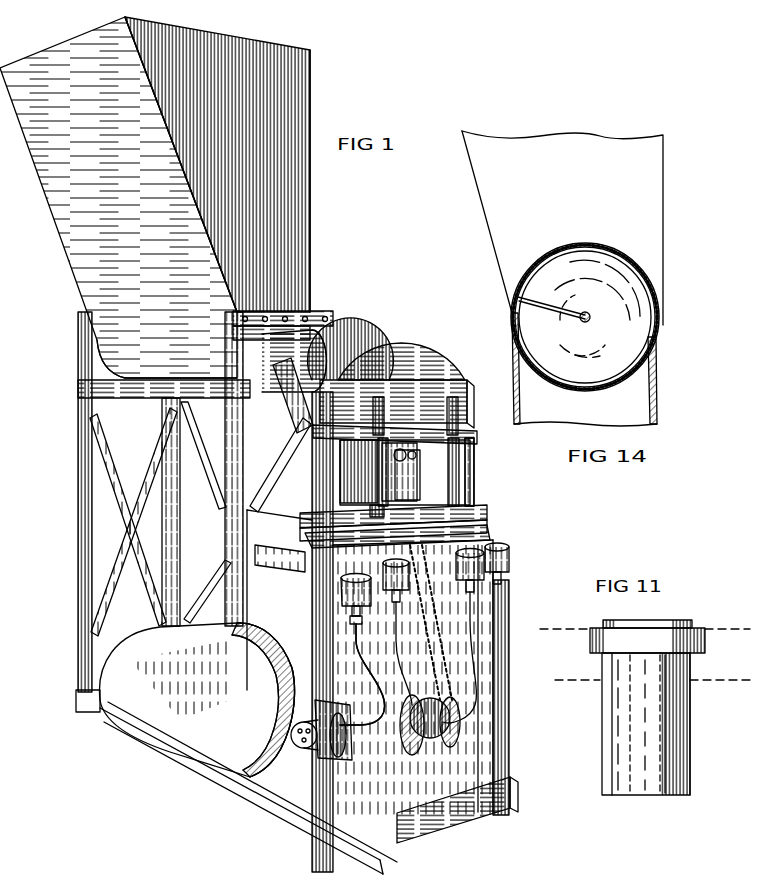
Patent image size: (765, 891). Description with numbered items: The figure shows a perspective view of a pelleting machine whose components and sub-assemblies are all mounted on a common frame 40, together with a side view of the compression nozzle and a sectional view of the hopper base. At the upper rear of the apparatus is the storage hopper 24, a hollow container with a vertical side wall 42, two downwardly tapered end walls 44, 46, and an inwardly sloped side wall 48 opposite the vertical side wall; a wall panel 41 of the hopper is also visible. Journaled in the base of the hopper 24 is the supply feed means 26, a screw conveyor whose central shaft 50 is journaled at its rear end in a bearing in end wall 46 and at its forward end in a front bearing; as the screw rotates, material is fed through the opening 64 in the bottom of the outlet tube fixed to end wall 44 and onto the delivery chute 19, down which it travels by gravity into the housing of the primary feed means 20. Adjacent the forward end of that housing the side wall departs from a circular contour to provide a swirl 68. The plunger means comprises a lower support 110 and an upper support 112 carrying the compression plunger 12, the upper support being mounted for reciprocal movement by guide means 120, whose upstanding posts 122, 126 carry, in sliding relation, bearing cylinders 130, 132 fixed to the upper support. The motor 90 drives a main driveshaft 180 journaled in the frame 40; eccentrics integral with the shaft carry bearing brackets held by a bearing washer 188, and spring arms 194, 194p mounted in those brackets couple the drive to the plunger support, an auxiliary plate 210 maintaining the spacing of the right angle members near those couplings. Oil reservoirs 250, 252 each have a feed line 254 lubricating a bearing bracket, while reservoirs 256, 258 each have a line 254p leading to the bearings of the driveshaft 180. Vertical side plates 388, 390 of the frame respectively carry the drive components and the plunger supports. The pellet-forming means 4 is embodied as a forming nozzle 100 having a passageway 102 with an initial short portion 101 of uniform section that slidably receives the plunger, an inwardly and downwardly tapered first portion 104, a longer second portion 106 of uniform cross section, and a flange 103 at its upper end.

In FIG. 1, the storage hopper 24 is at (187, 197).
In FIG. 14, the storage hopper 24 is at (598, 278).
In FIG. 1, the end wall 46 is at (42, 56).
In FIG. 1, the end wall 44 is at (217, 164).
In FIG. 1, the vertical side wall 42 is at (312, 122).
In FIG. 1, the hopper wall panel 41 is at (188, 164).
In FIG. 14, the hopper wall panel 41 is at (552, 238).
In FIG. 1, the inwardly sloped side wall 48 is at (92, 278).
In FIG. 1, the frame 40 is at (68, 545).
In FIG. 1, the motor 90 is at (221, 560).
In FIG. 1, the delivery chute 19 is at (290, 398).
In FIG. 14, the delivery chute 19 is at (672, 389).
In FIG. 14, the supply feed means 26 is at (630, 280).
In FIG. 14, the central shaft 50 is at (592, 319).
In FIG. 14, the opening 64 is at (606, 389).
In FIG. 1, the auxiliary plate 210 is at (432, 363).
In FIG. 1, the bearing cylinder 130 is at (461, 382).
In FIG. 1, the bearing cylinder 132 is at (377, 400).
In FIG. 1, the upper support 112 is at (473, 432).
In FIG. 1, the primary feed means 20 is at (405, 469).
In FIG. 1, the spring arm 194 is at (317, 565).
In FIG. 1, the spring arm 194p is at (470, 462).
In FIG. 1, the upstanding post 122 is at (459, 478).
In FIG. 1, the lower support 110 is at (472, 513).
In FIG. 1, the plunger 12 is at (398, 460).
In FIG. 1, the swirl 68 is at (399, 472).
In FIG. 1, the upstanding post 126 is at (377, 473).
In FIG. 1, the guide means 120 is at (377, 518).
In FIG. 1, the oil reservoir 250 is at (337, 607).
In FIG. 1, the oil reservoir 252 is at (510, 548).
In FIG. 1, the reservoir 256 is at (393, 568).
In FIG. 1, the reservoir 258 is at (458, 560).
In FIG. 1, the feed line 254 is at (377, 710).
In FIG. 1, the line 254p is at (480, 667).
In FIG. 1, the vertical side plate 390 is at (508, 699).
In FIG. 1, the vertical side plate 388 is at (392, 823).
In FIG. 1, the main driveshaft 180 is at (343, 757).
In FIG. 1, the bearing washer 188 is at (312, 742).
In FIG. 11, the pellet-forming means 4 is at (645, 691).
In FIG. 11, the forming nozzle 100 is at (696, 719).
In FIG. 11, the initial short portion 101 is at (680, 620).
In FIG. 11, the passageway 102 is at (628, 713).
In FIG. 11, the flange 103 is at (605, 622).
In FIG. 11, the first portion 104 is at (675, 667).
In FIG. 11, the second portion 106 is at (665, 750).